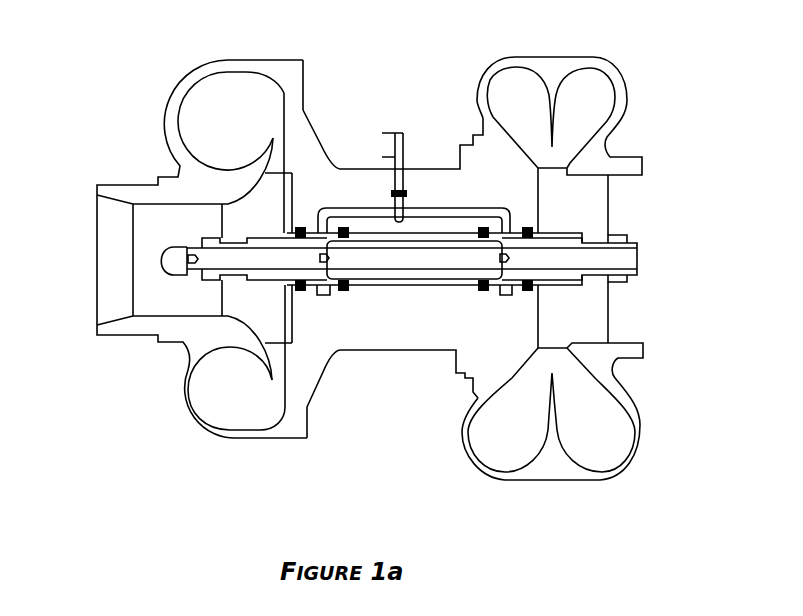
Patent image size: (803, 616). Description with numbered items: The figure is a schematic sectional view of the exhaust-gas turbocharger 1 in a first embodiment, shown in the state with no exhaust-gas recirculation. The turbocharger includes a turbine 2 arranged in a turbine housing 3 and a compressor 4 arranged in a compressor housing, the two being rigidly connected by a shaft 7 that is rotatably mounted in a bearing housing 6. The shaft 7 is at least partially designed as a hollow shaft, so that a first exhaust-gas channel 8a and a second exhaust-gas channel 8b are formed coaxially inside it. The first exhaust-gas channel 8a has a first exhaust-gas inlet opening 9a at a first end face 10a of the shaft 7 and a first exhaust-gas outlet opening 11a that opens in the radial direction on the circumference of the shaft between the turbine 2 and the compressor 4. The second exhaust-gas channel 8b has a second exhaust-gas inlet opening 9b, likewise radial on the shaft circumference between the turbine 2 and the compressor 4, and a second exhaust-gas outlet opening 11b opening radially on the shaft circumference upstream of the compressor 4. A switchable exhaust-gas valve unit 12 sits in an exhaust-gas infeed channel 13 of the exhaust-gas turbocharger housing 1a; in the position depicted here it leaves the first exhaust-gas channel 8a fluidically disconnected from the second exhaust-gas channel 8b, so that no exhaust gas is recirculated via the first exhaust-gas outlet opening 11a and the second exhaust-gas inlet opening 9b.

The exhaust-gas turbocharger 1 is at (655, 38).
The exhaust-gas turbocharger housing 1a is at (375, 196).
The turbine 2 is at (603, 220).
The turbine housing 3 is at (622, 350).
The compressor 4 is at (240, 225).
The bearing housing 6 is at (188, 185).
The shaft 7 is at (170, 268).
The first exhaust-gas channel 8a is at (635, 247).
The second exhaust-gas channel 8b is at (300, 268).
The first exhaust-gas inlet opening 9a is at (618, 263).
The second exhaust-gas inlet opening 9b is at (297, 258).
The first end face 10a is at (637, 273).
The first exhaust-gas outlet opening 11a is at (502, 255).
The second exhaust-gas outlet opening 11b is at (190, 259).
The switchable exhaust-gas valve unit 12 is at (402, 133).
The exhaust-gas infeed channel 13 is at (473, 217).